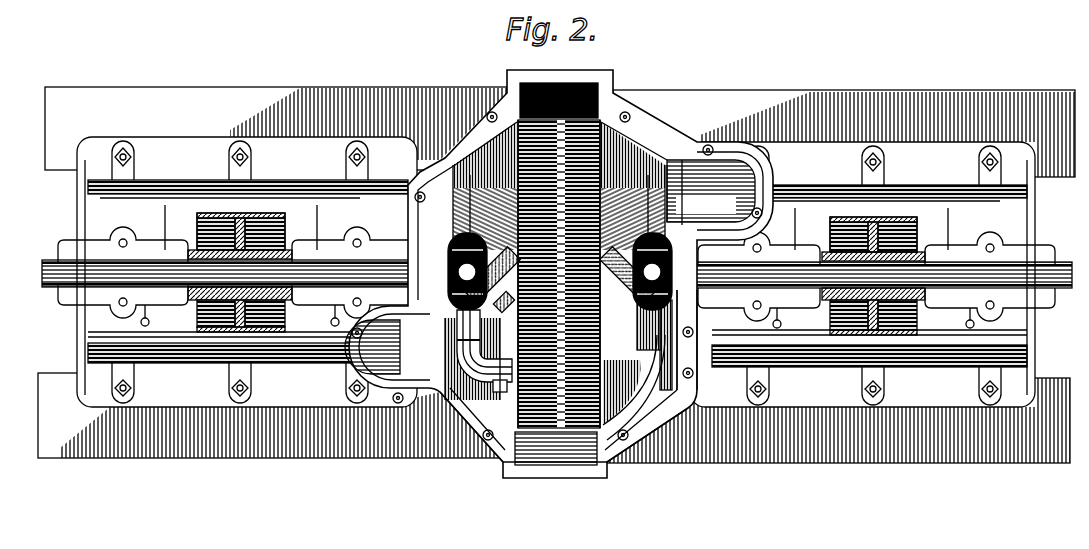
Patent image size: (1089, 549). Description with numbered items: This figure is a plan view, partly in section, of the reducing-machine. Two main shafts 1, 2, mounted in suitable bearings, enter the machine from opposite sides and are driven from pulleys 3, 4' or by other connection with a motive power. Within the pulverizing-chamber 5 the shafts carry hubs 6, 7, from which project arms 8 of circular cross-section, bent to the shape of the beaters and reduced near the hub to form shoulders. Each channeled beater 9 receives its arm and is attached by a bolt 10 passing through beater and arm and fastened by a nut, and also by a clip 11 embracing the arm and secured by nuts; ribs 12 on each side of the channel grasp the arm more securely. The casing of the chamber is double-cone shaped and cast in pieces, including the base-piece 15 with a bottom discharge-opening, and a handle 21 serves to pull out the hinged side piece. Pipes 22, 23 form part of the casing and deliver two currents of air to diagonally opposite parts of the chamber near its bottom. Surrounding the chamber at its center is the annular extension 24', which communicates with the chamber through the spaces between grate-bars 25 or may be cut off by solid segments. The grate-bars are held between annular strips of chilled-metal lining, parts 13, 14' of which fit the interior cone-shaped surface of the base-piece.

The main shaft 1 is at (47, 266).
The main shaft 2 is at (1063, 290).
The pulley 3 is at (287, 226).
The pulley 4' is at (882, 276).
The pulverizing-chamber 5 is at (637, 370).
The hub 6 is at (440, 241).
The hub 7 is at (686, 193).
The arm 8 is at (474, 310).
The beater 9 is at (484, 346).
The bolt 10 is at (496, 393).
The clip 11 is at (466, 340).
The rib 12 is at (648, 152).
The lining part 13 is at (480, 410).
The lining part 14' is at (647, 450).
The base-piece 15 is at (666, 359).
The handle 21 is at (654, 195).
The pipe 22 is at (387, 347).
The pipe 23 is at (715, 191).
The annular extension 24' is at (559, 291).
The grate-bar 25 is at (533, 428).